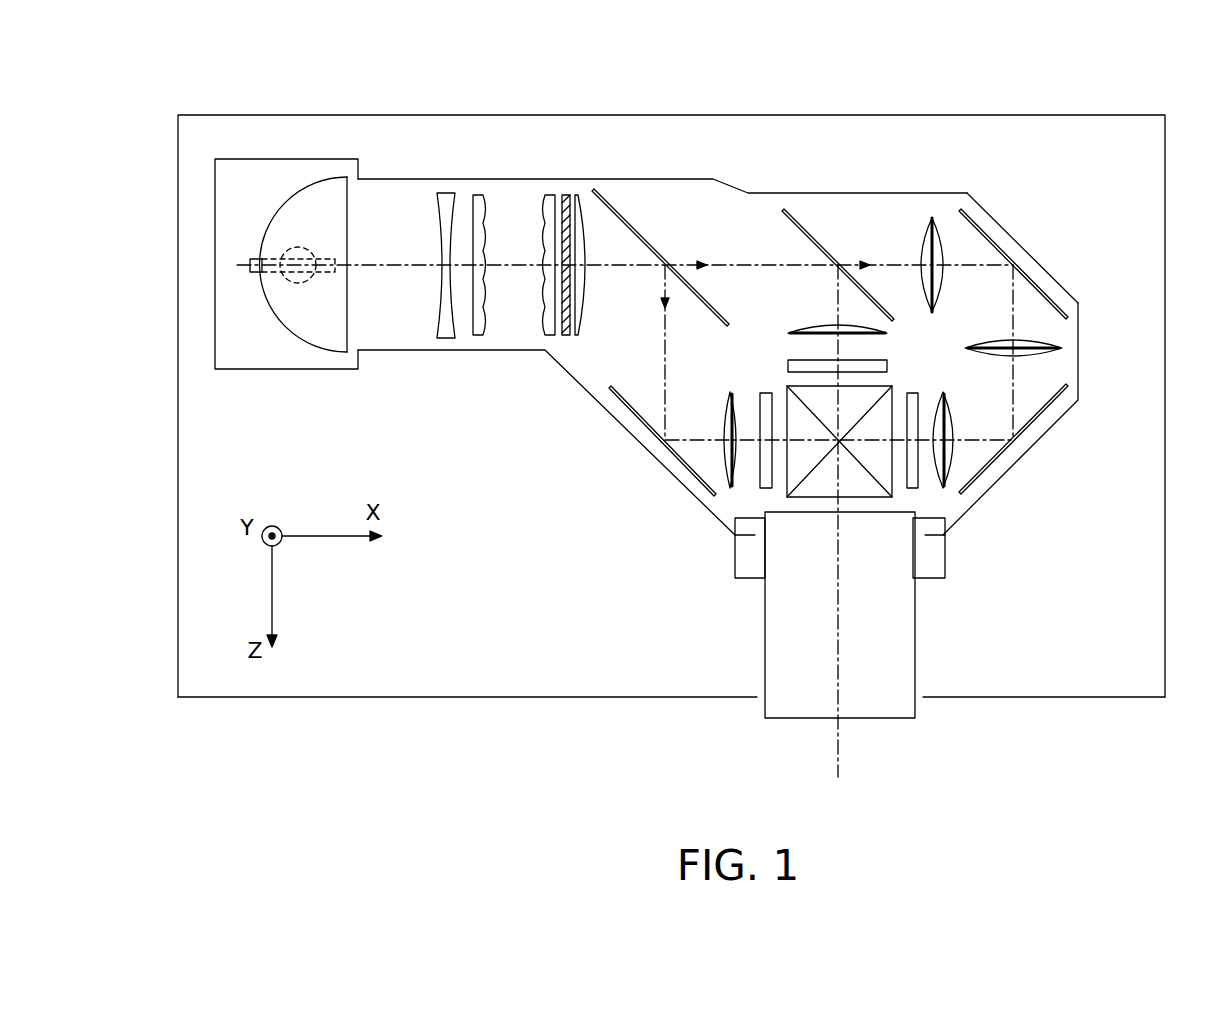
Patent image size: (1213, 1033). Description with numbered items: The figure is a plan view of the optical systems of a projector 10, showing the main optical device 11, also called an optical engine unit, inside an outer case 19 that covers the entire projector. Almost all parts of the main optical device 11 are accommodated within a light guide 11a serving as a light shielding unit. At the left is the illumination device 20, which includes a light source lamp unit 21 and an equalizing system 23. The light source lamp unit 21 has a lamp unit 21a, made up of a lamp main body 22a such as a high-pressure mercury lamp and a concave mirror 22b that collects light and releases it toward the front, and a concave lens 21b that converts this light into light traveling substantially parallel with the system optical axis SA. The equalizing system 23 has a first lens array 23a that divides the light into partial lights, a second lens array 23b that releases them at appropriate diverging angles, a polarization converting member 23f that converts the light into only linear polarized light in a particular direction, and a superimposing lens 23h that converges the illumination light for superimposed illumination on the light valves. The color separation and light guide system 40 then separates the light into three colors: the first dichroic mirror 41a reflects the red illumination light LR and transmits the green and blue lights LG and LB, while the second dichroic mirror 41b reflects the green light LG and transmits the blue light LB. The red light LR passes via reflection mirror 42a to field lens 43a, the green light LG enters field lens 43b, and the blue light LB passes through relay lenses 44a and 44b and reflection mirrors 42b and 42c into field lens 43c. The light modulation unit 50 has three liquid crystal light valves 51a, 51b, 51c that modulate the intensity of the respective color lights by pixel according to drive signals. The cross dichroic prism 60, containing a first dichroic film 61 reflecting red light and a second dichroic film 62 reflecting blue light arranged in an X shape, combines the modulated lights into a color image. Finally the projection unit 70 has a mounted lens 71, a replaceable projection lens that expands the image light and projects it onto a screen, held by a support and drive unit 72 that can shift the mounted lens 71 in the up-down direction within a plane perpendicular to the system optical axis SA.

The projector 10 is at (1124, 44).
The main optical device 11 is at (740, 307).
The light guide 11a is at (1015, 178).
The outer case 19 is at (1085, 699).
The illumination device 20 is at (312, 242).
The light source lamp unit 21 is at (298, 342).
The lamp unit 21a is at (347, 210).
The concave lens 21b is at (440, 338).
The lamp main body 22a is at (290, 278).
The concave mirror 22b is at (308, 190).
The equalizing system 23 is at (550, 300).
The first lens array 23a is at (478, 197).
The second lens array 23b is at (548, 196).
The polarization converting member 23f is at (567, 338).
The superimposing lens 23h is at (578, 190).
The color separation and light guide system 40 is at (863, 293).
The first dichroic mirror 41a is at (625, 217).
The second dichroic mirror 41b is at (808, 213).
The reflection mirror 42a is at (652, 432).
The reflection mirror 42b is at (1050, 293).
The reflection mirror 42c is at (1033, 428).
The field lens 43a is at (727, 455).
The field lens 43b is at (788, 332).
The field lens 43c is at (950, 460).
The relay lens 44a is at (932, 218).
The relay lens 44b is at (1062, 350).
The light modulation unit 50 is at (830, 490).
The liquid crystal light valve 51a is at (765, 492).
The liquid crystal light valve 51b is at (788, 365).
The liquid crystal light valve 51c is at (913, 490).
The cross dichroic prism 60 is at (872, 506).
The first dichroic film 61 is at (857, 463).
The second dichroic film 62 is at (815, 473).
The projection unit 70 is at (833, 668).
The mounted lens 71 is at (890, 707).
The support and drive unit 72 is at (750, 567).
The system optical axis SA is at (410, 268).
The illumination light in R color LR is at (665, 362).
The illumination light in G color LG is at (838, 298).
The illumination light in B color LB is at (1013, 377).